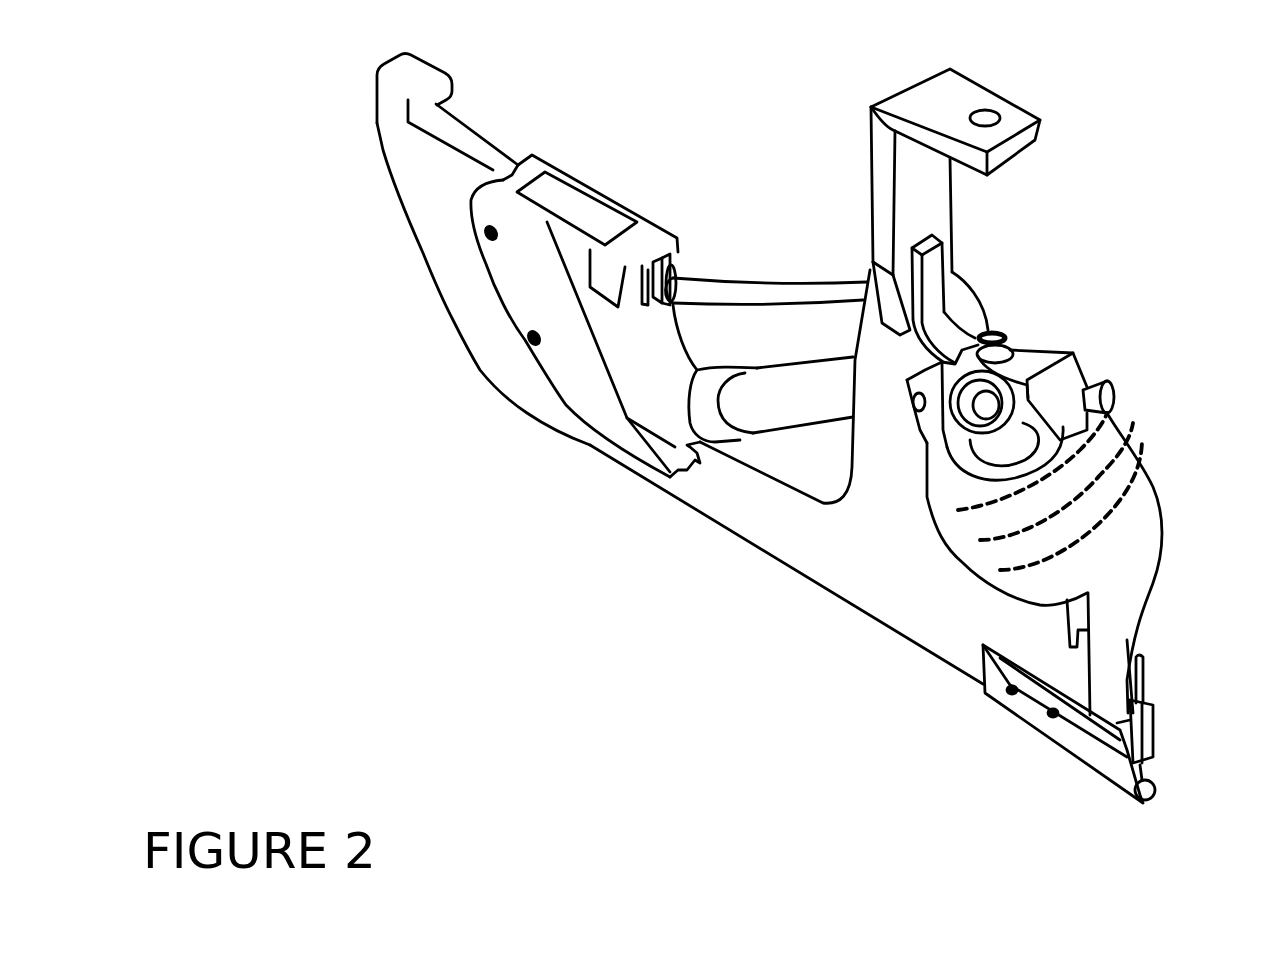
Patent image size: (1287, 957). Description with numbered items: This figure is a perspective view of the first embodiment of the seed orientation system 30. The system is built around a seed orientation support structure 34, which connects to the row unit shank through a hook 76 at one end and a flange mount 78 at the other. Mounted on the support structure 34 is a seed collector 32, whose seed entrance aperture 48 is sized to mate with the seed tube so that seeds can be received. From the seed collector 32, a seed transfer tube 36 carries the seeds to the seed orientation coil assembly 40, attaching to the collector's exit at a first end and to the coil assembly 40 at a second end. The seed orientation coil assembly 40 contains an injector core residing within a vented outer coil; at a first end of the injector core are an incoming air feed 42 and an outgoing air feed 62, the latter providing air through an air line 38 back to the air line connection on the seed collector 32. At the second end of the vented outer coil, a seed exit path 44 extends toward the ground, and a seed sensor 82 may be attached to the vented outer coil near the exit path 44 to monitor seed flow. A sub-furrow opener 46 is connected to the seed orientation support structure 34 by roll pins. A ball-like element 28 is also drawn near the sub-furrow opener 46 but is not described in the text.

The ball 28 is at (1156, 789).
The seed orientation system 30 is at (1170, 297).
The seed collector 32 is at (513, 272).
The seed orientation support structure 34 is at (810, 567).
The seed transfer tube 36 is at (787, 423).
The air line 38 is at (735, 293).
The seed orientation coil assembly 40 is at (1137, 497).
The incoming air feed 42 is at (980, 458).
The seed exit path 44 is at (1127, 648).
The sub-furrow opener 46 is at (1113, 778).
The seed entrance aperture 48 is at (577, 207).
The outgoing air feed 62 is at (1010, 360).
The hook 76 is at (385, 90).
The flange mount 78 is at (1037, 141).
The seed sensor 82 is at (1157, 710).